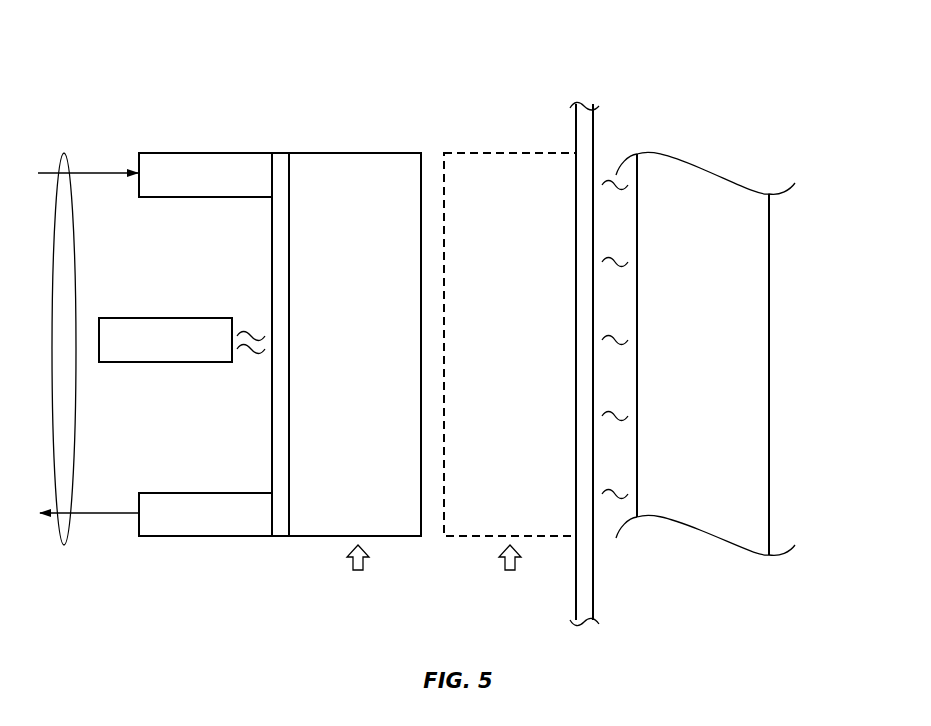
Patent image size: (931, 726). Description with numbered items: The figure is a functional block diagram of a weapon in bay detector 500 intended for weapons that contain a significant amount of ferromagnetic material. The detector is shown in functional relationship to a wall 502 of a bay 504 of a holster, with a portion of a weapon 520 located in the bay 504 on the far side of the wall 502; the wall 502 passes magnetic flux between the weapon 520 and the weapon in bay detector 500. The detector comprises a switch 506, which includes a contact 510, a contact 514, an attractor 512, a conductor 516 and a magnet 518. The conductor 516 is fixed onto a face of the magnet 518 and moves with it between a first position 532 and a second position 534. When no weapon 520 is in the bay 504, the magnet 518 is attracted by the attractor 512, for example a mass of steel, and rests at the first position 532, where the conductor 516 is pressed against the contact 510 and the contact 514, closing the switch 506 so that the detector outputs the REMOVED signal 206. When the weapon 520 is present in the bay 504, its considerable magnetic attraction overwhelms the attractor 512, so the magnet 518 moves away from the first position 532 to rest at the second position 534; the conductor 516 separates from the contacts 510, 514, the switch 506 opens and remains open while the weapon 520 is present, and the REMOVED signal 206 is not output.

The weapon in bay detector 500 is at (96, 37).
The switch 506 is at (432, 98).
The bay 504 is at (769, 98).
The contact 510 is at (203, 153).
The contact 514 is at (207, 537).
The conductor 516 is at (278, 153).
The magnet 518 is at (355, 153).
The attractor 512 is at (162, 317).
The REMOVED signal 206 is at (65, 545).
The wall 502 is at (576, 138).
The weapon 520 is at (657, 518).
The first position 532 is at (358, 581).
The second position 534 is at (510, 385).